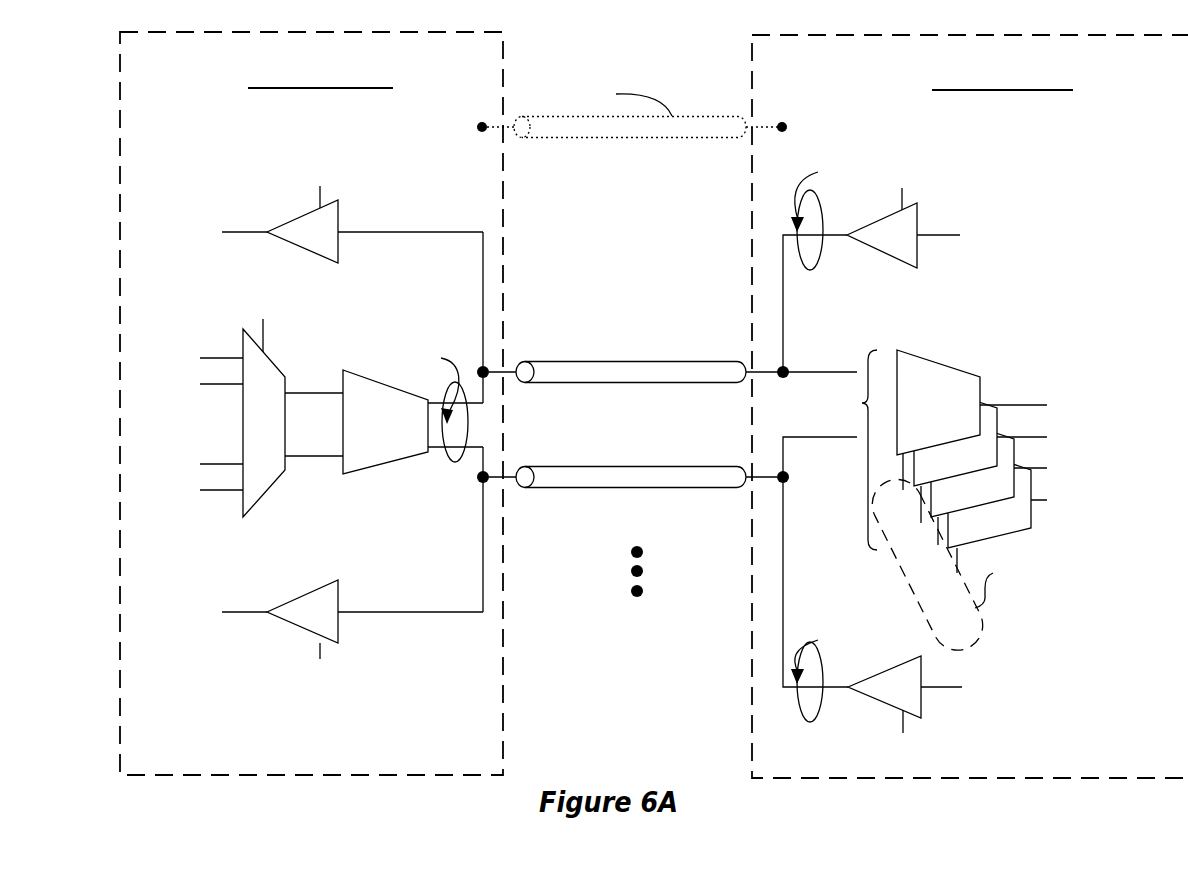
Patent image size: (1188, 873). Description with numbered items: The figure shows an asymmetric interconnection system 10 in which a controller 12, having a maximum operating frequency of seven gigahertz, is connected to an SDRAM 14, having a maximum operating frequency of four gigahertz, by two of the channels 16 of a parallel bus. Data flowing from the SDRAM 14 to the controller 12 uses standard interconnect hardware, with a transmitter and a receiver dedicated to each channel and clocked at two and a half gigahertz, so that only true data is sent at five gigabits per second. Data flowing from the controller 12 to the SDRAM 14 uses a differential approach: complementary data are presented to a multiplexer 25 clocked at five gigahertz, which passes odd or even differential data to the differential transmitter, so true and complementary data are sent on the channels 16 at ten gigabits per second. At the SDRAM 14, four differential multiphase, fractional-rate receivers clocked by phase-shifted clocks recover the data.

The data transmission system 10 is at (214, 806).
The controller 12 is at (392, 32).
The SDRAM 14 is at (845, 35).
The channels 16 is at (650, 27).
The multiplexer 25 is at (262, 500).